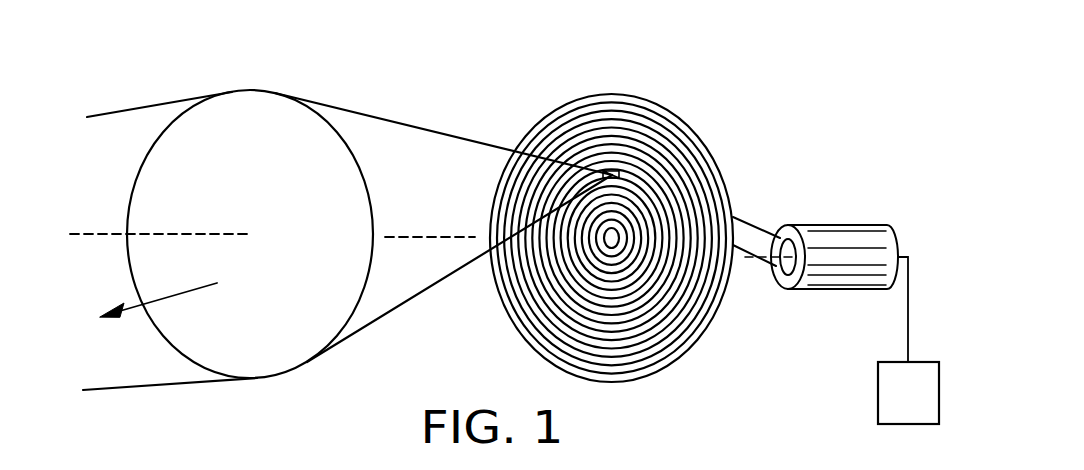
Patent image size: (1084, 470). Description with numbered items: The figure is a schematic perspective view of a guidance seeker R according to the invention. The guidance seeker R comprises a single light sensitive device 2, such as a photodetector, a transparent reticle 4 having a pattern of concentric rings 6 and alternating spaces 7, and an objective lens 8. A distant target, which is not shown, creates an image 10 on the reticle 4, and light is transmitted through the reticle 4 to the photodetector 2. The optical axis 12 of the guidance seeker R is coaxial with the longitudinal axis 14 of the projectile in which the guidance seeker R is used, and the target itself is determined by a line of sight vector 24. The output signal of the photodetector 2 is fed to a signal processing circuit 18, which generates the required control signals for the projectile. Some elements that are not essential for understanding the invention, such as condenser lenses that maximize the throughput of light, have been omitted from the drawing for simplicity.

The light sensitive device 2 is at (820, 225).
The transparent reticle 4 is at (612, 95).
The concentric rings 6 is at (683, 133).
The alternating spaces 7 is at (700, 160).
The objective lens 8 is at (246, 90).
The image 10 is at (616, 170).
The optical axis 12 is at (88, 233).
The longitudinal axis 14 is at (118, 231).
The signal processing circuit 18 is at (902, 393).
The line of sight vector 24 is at (140, 305).
The guidance seeker R is at (417, 98).